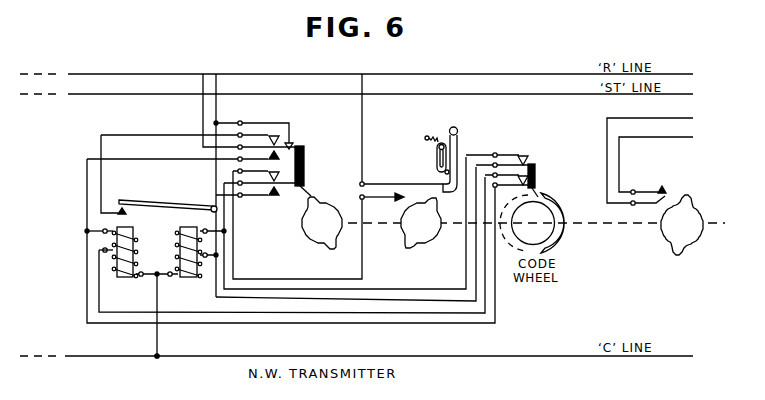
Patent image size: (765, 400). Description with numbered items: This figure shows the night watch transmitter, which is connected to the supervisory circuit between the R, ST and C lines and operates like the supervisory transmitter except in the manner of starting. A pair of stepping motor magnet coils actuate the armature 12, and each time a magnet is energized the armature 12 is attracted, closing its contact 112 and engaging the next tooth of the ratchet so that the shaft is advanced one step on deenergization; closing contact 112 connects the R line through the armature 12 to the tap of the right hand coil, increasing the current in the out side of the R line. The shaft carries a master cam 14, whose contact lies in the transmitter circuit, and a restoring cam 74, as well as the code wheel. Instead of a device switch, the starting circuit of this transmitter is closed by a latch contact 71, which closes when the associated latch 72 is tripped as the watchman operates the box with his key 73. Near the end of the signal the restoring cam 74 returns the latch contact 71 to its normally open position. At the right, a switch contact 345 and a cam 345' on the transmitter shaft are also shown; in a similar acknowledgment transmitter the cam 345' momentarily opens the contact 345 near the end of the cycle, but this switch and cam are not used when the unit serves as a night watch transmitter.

The armature 12 is at (165, 206).
The armature contact 112 is at (120, 201).
The master cam 14 is at (314, 238).
The latch contact 71 is at (399, 196).
The latch 72 is at (458, 155).
The key 73 is at (438, 150).
The restoring cam 74 is at (402, 236).
The contact 345 is at (650, 161).
The cam 345' is at (696, 211).